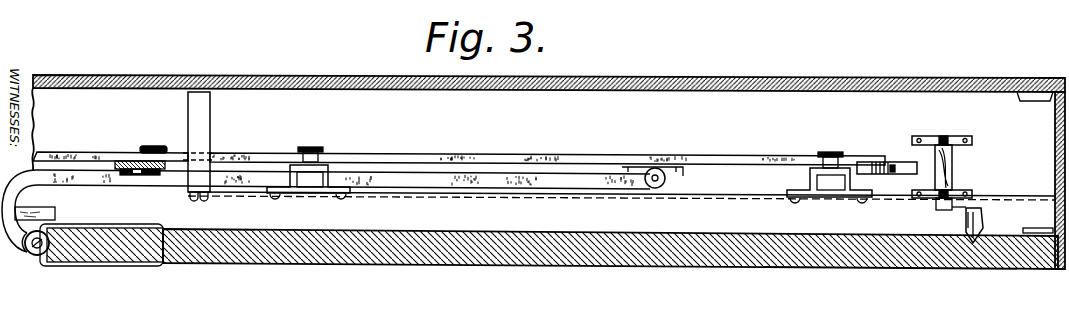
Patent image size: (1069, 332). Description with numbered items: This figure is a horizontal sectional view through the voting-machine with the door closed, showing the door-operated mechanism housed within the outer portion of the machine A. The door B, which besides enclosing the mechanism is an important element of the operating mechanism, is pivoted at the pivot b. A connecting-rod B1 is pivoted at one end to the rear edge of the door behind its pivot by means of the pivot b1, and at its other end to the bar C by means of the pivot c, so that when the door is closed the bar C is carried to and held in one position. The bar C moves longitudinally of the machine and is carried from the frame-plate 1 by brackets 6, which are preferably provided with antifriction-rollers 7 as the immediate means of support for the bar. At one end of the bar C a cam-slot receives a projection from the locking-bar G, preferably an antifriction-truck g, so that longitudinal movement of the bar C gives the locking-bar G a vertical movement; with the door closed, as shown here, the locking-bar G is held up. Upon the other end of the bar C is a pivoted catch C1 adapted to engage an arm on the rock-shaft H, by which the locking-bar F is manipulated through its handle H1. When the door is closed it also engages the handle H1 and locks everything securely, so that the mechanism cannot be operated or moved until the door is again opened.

The outer portion of the machine A is at (448, 88).
The door B is at (198, 253).
The connecting-rod B1 is at (100, 183).
The pivot b is at (100, 240).
The pivot b1 is at (28, 251).
The bar C is at (96, 152).
The pivoted catch C1 is at (903, 170).
The pivot c is at (668, 180).
The antifriction-truck g is at (157, 146).
The locking-bar G is at (160, 175).
The frame-plate 1 is at (503, 197).
The brackets 6 is at (332, 178).
The antifriction-rollers 7 is at (322, 158).
The rock-shaft H is at (950, 136).
The handle H1 is at (963, 222).
The locking-bar F is at (953, 166).